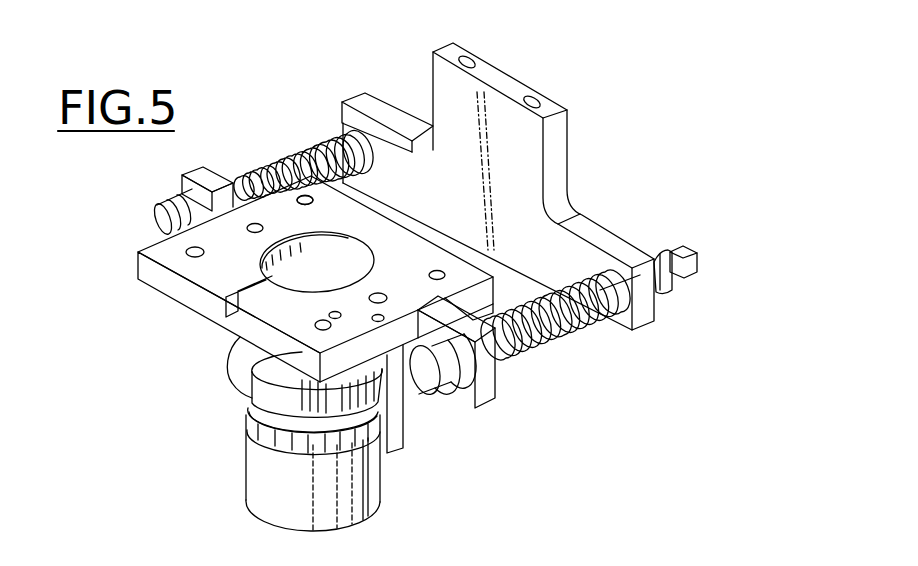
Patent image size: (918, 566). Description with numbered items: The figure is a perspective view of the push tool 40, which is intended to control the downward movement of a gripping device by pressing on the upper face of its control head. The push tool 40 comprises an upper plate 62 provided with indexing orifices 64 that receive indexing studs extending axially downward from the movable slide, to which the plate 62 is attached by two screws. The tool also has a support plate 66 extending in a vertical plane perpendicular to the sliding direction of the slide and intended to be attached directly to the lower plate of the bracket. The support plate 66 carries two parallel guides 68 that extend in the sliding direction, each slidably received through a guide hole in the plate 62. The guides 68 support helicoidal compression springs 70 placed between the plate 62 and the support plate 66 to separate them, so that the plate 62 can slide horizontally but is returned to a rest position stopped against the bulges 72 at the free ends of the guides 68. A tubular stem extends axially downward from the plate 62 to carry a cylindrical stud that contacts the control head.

The push tool 40 is at (180, 413).
The upper plate 62 is at (222, 272).
The indexing orifices 64 is at (304, 196).
The support plate 66 is at (509, 62).
The guides 68 is at (310, 122).
The helicoidal compression springs 70 is at (533, 356).
The bulges 72 is at (433, 384).